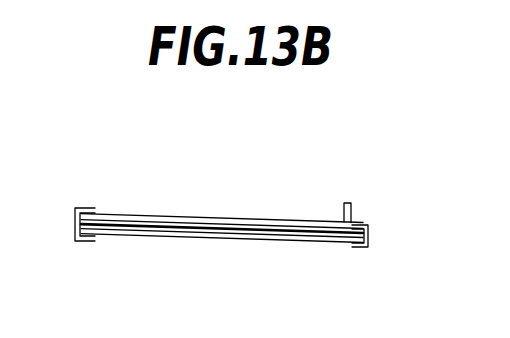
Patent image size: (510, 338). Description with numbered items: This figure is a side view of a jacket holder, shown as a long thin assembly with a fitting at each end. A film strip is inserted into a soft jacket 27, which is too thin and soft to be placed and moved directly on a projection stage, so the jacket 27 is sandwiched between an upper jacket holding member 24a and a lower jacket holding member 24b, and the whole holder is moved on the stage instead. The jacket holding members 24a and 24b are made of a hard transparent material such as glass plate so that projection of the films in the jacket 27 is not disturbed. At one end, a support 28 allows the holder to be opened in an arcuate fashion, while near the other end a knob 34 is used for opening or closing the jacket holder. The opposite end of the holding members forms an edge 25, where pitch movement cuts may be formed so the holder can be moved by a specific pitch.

The jacket holding member 24a is at (210, 218).
The jacket holding member 24b is at (263, 240).
The jacket 27 is at (313, 221).
The support 28 is at (74, 242).
The knob 34 is at (352, 203).
The edge 25 is at (368, 237).